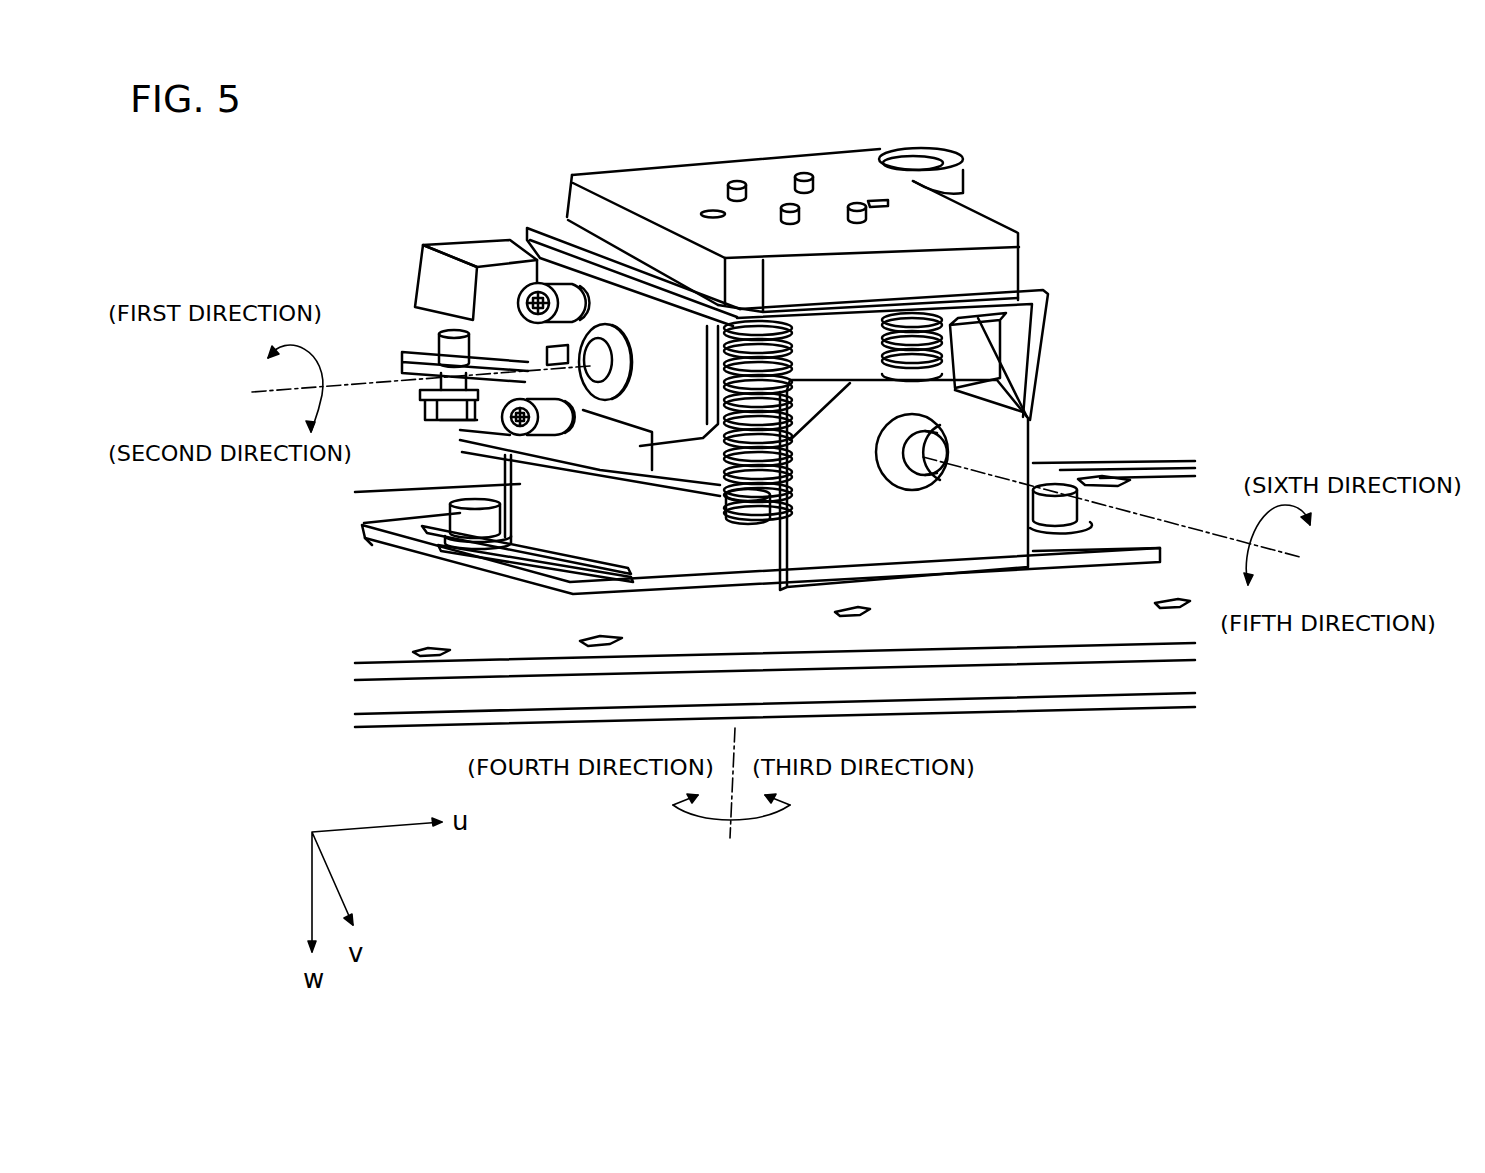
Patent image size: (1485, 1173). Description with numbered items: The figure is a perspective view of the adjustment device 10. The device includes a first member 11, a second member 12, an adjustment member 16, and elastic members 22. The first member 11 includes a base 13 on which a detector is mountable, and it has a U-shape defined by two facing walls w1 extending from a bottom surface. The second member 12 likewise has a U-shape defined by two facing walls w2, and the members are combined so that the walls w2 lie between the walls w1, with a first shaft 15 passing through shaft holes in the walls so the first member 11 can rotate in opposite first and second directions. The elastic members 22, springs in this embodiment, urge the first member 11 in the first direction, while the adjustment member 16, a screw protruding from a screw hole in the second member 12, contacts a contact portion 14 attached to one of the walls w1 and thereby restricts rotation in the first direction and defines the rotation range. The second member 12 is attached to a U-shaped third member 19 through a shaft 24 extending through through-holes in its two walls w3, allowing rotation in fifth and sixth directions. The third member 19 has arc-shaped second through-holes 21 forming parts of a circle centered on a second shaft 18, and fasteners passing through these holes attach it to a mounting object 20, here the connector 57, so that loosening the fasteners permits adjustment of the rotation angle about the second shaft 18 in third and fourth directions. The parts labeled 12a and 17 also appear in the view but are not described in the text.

The adjustment device 10 is at (958, 114).
The first member 11 is at (1030, 292).
The second member 12 is at (637, 452).
The arm portion 12a is at (487, 433).
The base 13 is at (950, 225).
The contact portion 14 is at (471, 245).
The first shaft 15 is at (636, 372).
The adjustment member 16 is at (445, 348).
The screw 17 is at (557, 452).
The second shaft 18 is at (747, 537).
The third member 19 is at (400, 515).
The mounting object 20 is at (382, 612).
The second through-holes 21 is at (518, 565).
The elastic members 22 is at (982, 318).
The shaft 24 is at (923, 467).
The connector 57 is at (775, 594).
The walls w1 is at (667, 337).
The walls w2 is at (652, 478).
The walls w3 is at (963, 533).